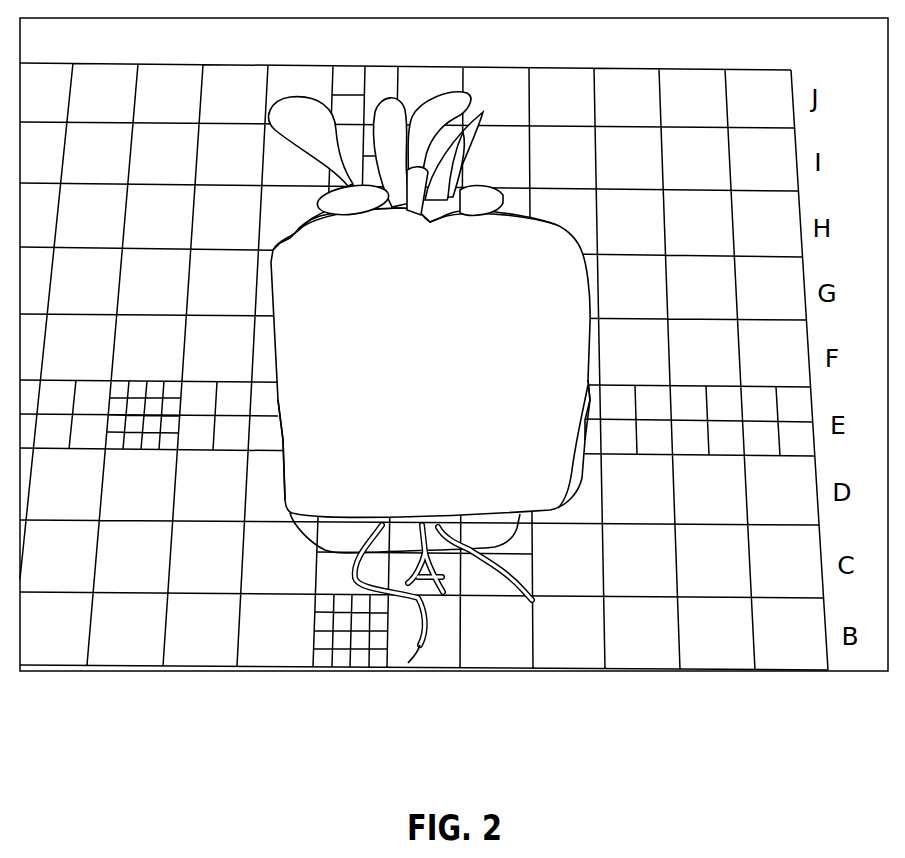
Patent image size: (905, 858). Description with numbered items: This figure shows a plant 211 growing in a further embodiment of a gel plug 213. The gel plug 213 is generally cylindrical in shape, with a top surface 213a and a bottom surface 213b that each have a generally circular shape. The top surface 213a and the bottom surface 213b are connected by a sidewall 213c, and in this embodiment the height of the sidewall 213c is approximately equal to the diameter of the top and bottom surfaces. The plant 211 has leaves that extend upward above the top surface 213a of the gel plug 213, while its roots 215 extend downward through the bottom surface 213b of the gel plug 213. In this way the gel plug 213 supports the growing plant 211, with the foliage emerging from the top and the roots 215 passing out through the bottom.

The plant 211 is at (527, 167).
The gel plug 213 is at (592, 359).
The top surface 213a is at (560, 223).
The bottom surface 213b is at (518, 528).
The sidewall 213c is at (461, 377).
The roots 215 is at (537, 606).